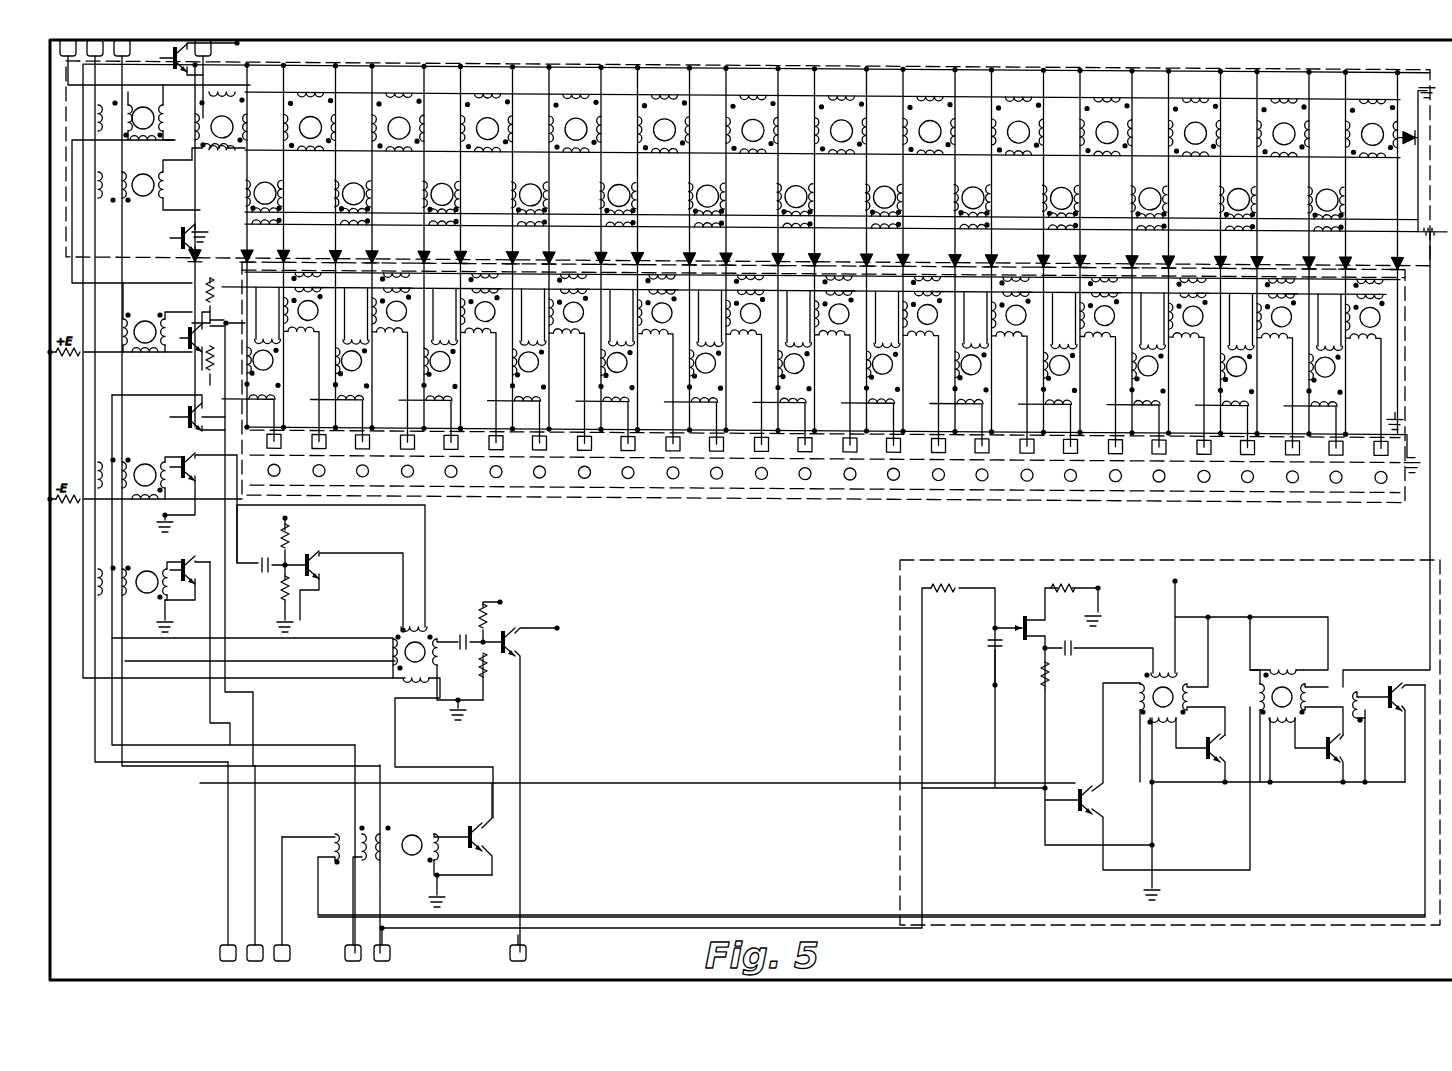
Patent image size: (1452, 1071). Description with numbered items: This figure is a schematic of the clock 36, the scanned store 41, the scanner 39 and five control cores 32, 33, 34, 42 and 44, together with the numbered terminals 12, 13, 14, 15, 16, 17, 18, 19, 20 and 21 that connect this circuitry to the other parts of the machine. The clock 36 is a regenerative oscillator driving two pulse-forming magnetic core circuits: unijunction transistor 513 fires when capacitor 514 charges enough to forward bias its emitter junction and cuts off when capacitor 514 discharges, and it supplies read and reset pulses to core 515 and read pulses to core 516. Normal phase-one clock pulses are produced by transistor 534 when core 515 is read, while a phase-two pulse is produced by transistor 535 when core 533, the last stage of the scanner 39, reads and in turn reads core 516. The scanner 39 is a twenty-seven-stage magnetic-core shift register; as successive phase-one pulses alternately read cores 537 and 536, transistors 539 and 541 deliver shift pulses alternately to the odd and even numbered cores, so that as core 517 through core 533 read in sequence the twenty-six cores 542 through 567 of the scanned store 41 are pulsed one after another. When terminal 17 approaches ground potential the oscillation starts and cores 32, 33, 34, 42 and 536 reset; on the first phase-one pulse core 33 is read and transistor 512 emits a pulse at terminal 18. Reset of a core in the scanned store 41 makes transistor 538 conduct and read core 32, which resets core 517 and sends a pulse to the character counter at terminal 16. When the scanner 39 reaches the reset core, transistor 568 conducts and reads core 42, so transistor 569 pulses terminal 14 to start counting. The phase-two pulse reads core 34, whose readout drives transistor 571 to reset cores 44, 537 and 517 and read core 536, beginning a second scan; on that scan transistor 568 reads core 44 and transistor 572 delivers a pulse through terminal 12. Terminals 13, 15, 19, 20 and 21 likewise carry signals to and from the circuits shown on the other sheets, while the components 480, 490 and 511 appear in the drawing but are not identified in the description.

The scanner 39 is at (1264, 68).
The core 567 is at (1409, 282).
The scanned store 41 is at (1395, 495).
The indicator elements 480 is at (807, 455).
The indicator lamps 490 is at (910, 489).
The transistor 539 is at (212, 52).
The core 537 is at (150, 105).
The core 517 is at (218, 157).
The core 536 is at (149, 192).
The transistor 541 is at (170, 244).
The core 542 is at (265, 320).
The control core 32 is at (154, 317).
The transistor 538 is at (188, 344).
The transistor 511 is at (211, 410).
The control core 42 is at (154, 459).
The transistor 569 is at (205, 452).
The control core 33 is at (154, 565).
The transistor 512 is at (200, 552).
The transistor 568 is at (320, 568).
The control core 44 is at (428, 632).
The transistor 572 is at (505, 630).
The control core 34 is at (422, 832).
The transistor 571 is at (486, 826).
The core 533 is at (1375, 119).
The clock 36 is at (879, 580).
The unijunction transistor 513 is at (1023, 618).
The capacitor 514 is at (976, 671).
The core 515 is at (1155, 689).
The core 516 is at (1300, 670).
The transistor 535 is at (1400, 684).
The transistor 534 is at (1092, 793).
The terminal 19 is at (155, 62).
The terminal 15 is at (157, 401).
The terminal 13 is at (184, 403).
The terminal 16 is at (203, 79).
The terminal 18 is at (228, 861).
The terminal 14 is at (255, 863).
The terminal 21 is at (282, 899).
The terminal 20 is at (353, 909).
The terminal 17 is at (382, 944).
The terminal 12 is at (518, 948).